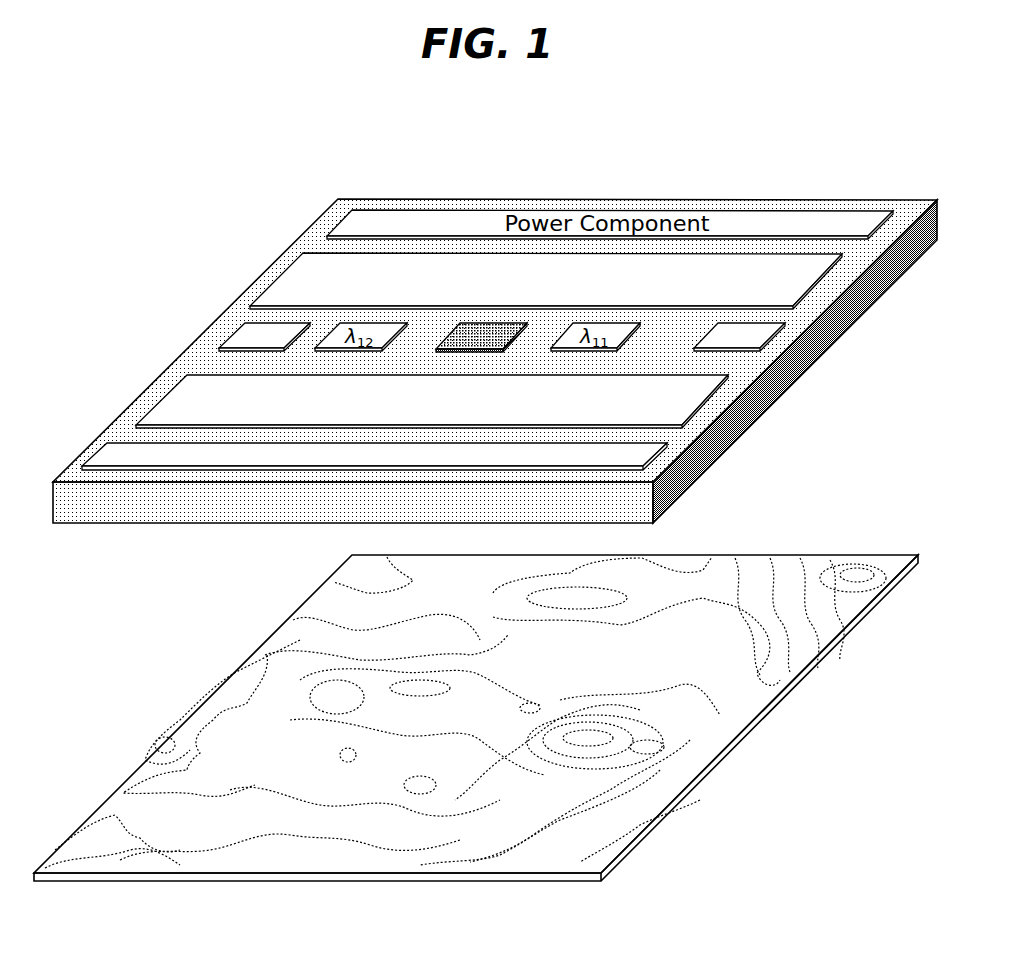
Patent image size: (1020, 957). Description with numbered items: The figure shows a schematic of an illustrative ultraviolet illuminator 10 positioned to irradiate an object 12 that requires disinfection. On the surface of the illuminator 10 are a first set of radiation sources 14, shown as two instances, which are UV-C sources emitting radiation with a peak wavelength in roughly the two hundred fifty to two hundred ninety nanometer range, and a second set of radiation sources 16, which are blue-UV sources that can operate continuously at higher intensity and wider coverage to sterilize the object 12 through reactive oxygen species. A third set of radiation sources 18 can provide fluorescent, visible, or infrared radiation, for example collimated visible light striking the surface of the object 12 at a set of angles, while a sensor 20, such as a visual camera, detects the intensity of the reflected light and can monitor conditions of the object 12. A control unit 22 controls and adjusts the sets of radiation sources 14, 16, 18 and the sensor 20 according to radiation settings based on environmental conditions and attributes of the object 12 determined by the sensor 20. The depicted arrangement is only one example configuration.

The ultraviolet illuminator 10 is at (492, 198).
The object 12 is at (760, 718).
The first set of radiation sources 14 is at (233, 332).
The second set of radiation sources 16 is at (503, 286).
The third set of radiation sources 18 is at (763, 333).
The sensor 20 is at (457, 326).
The control unit 22 is at (648, 459).